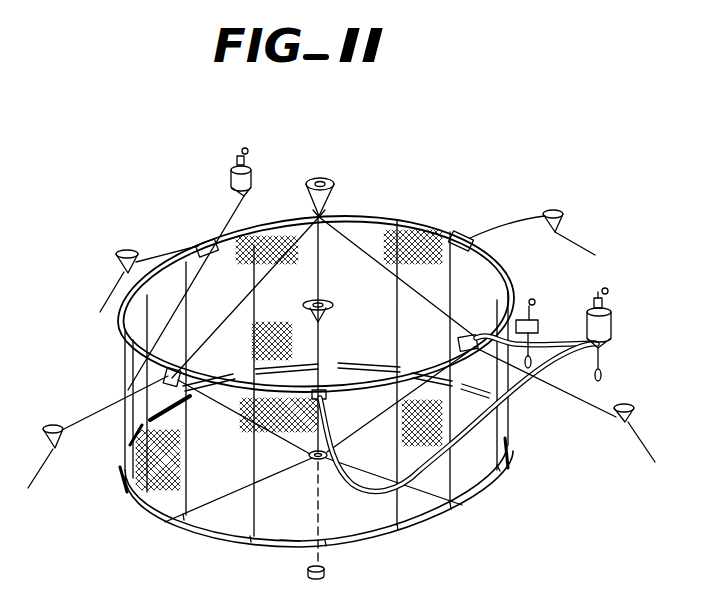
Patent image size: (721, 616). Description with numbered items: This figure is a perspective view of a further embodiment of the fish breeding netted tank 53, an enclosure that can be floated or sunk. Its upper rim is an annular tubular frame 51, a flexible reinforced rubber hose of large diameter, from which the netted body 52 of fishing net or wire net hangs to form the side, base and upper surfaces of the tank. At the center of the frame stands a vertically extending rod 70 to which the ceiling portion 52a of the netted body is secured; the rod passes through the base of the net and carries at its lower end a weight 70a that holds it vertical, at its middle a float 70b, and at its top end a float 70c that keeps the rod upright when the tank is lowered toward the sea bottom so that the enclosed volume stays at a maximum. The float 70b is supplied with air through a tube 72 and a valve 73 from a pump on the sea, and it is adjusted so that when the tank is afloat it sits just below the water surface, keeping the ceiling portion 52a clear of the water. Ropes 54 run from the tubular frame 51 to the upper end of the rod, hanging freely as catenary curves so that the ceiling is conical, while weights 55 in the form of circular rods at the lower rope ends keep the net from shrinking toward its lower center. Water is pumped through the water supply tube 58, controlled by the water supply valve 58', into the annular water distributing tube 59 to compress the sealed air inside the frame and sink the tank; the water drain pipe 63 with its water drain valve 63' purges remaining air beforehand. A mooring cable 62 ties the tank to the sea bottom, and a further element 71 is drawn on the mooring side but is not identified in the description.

The tubular frame 51 is at (470, 235).
The netted body 52 is at (168, 490).
The ceiling portion 52a is at (492, 264).
The fish breeding netted tank 53 is at (300, 511).
The ropes 54 is at (220, 323).
The weights 55 is at (292, 538).
The water supply tube 58 is at (458, 418).
The water supply valve 58' is at (626, 310).
The annular water distributing tube 59 is at (432, 236).
The mooring cable 62 is at (640, 442).
The water drain pipe 63 is at (207, 283).
The water drain valve 63' is at (233, 155).
The rod 70 is at (308, 180).
The weight 70a is at (330, 207).
The float 70b is at (334, 305).
The float 70c is at (328, 182).
The float 71 is at (627, 405).
The tube 72 is at (468, 330).
The valve 73 is at (535, 322).